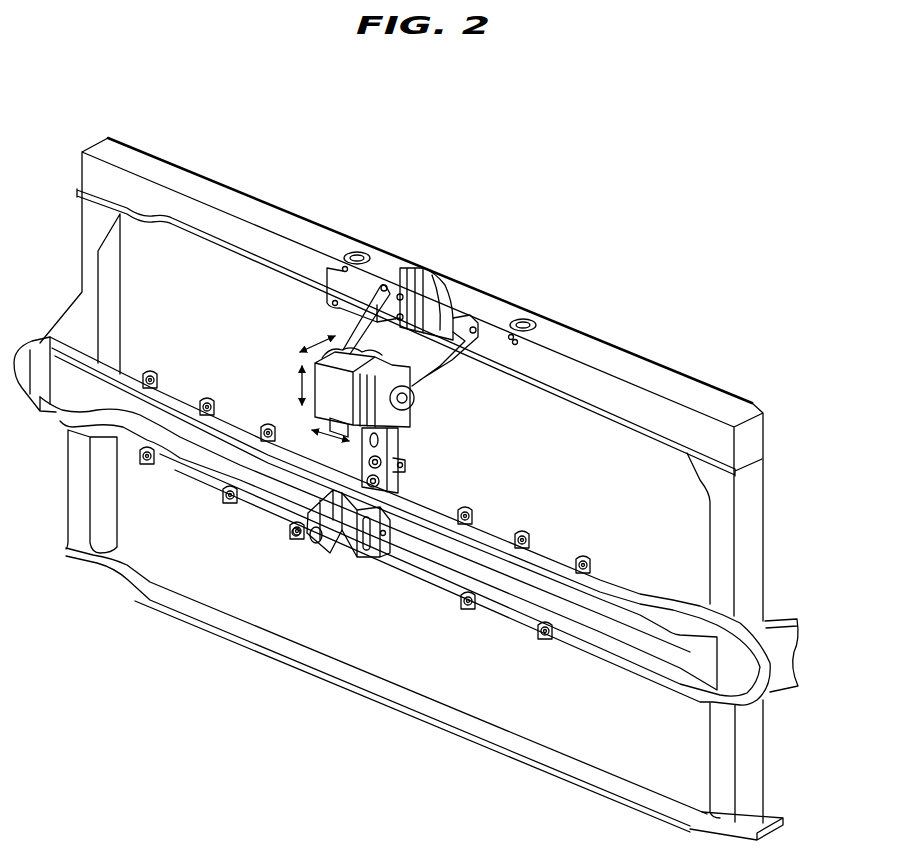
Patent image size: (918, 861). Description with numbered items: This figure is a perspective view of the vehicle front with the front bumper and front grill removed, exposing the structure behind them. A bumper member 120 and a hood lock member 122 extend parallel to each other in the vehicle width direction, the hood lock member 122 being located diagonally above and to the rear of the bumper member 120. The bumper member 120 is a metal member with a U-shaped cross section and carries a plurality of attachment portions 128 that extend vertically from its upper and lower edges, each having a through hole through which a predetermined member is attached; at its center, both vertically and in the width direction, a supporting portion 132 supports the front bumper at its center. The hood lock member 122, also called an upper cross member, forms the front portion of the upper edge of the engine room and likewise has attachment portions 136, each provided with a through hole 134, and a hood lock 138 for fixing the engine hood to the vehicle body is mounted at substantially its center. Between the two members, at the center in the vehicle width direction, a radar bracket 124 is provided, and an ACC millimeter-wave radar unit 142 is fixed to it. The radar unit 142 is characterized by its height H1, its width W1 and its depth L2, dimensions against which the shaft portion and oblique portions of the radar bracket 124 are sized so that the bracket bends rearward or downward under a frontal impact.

The bumper member 120 is at (753, 665).
The hood lock member 122 is at (648, 410).
The radar bracket 124 is at (394, 444).
The attachment portion 128 is at (587, 553).
The supporting portion 132 is at (378, 562).
The through hole 134 is at (514, 328).
The attachment portion 136 is at (520, 344).
The hood lock 138 is at (415, 262).
The ACC millimeter-wave radar unit 142 is at (416, 400).
The height of the radar unit H1 is at (298, 386).
The width of the radar unit W1 is at (337, 432).
The depth of the radar unit L2 is at (306, 346).